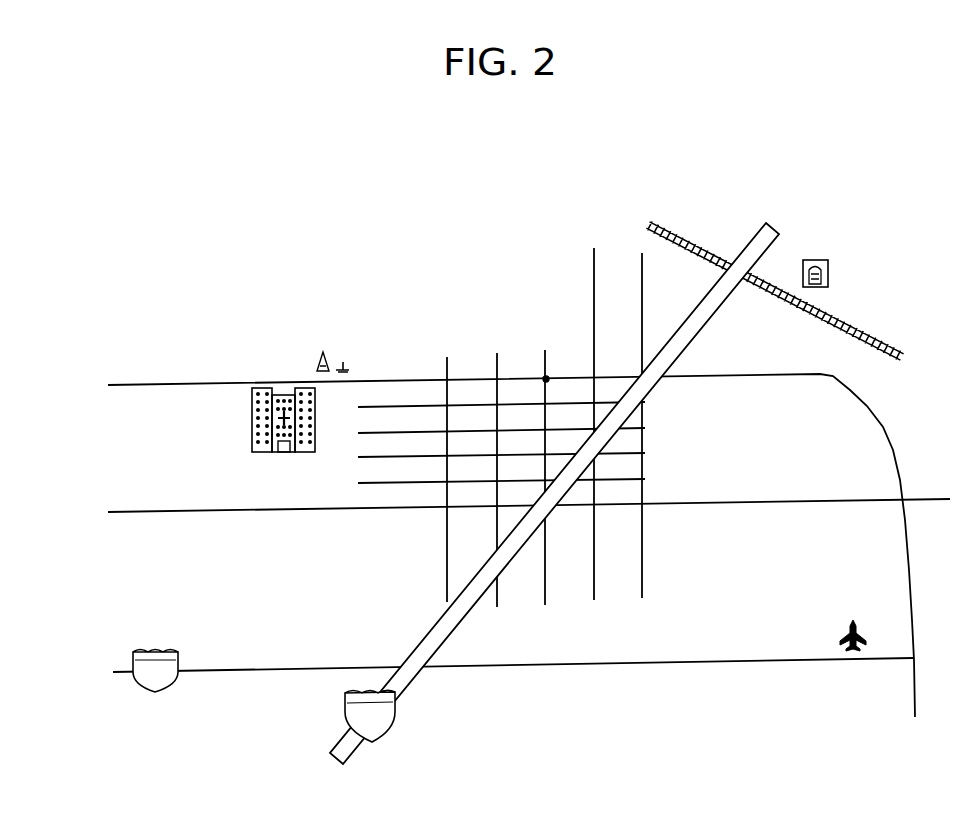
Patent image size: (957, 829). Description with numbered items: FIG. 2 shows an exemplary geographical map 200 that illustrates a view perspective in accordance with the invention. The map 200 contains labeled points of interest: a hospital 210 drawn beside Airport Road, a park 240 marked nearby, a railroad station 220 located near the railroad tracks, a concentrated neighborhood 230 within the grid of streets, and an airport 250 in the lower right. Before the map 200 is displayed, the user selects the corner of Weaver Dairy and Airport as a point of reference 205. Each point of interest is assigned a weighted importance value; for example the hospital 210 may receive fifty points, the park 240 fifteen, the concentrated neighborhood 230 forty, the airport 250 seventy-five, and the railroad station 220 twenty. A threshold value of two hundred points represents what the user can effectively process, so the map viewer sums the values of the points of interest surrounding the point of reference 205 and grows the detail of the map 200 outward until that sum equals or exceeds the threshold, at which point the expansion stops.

The geographical map 200 is at (207, 207).
The point of reference 205 is at (548, 377).
The hospital 210 is at (252, 412).
The railroad station 220 is at (828, 273).
The concentrated neighborhood 230 is at (554, 493).
The park 240 is at (343, 367).
The airport 250 is at (843, 636).